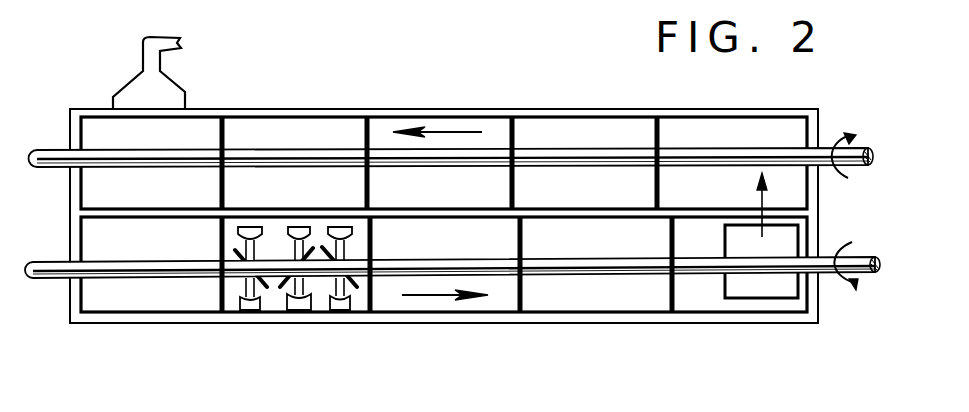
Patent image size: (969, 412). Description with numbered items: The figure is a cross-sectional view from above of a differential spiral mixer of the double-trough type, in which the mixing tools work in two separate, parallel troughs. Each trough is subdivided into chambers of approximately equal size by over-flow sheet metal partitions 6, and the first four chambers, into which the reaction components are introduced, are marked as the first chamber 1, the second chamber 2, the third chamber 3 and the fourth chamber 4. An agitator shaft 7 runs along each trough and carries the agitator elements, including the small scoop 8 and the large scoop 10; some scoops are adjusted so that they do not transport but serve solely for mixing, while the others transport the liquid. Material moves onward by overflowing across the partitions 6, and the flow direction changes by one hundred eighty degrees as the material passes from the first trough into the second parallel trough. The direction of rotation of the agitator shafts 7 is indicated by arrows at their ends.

The first chamber 1 is at (160, 295).
The second chamber 2 is at (360, 305).
The third chamber 3 is at (428, 303).
The fourth chamber 4 is at (585, 297).
The over-flow sheet metal partition 6 is at (225, 148).
The agitator shaft 7 is at (856, 178).
The small scoop 8 is at (250, 312).
The large scoop 10 is at (297, 312).